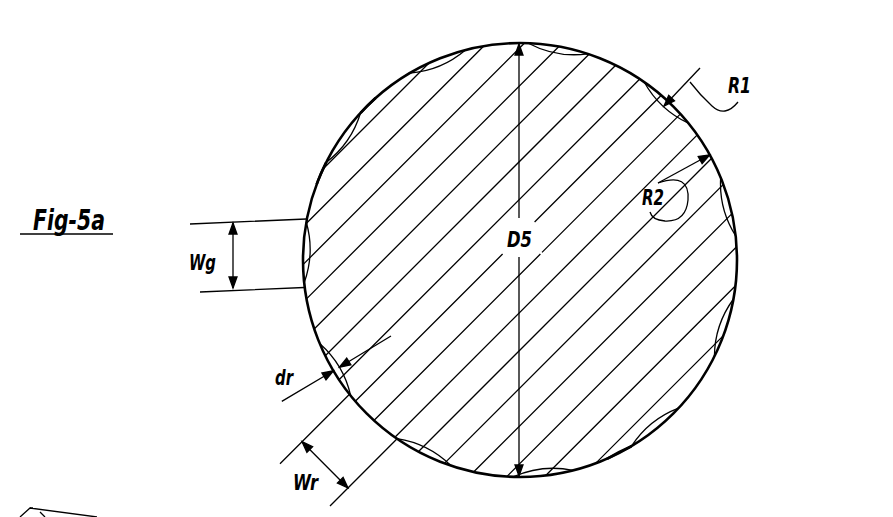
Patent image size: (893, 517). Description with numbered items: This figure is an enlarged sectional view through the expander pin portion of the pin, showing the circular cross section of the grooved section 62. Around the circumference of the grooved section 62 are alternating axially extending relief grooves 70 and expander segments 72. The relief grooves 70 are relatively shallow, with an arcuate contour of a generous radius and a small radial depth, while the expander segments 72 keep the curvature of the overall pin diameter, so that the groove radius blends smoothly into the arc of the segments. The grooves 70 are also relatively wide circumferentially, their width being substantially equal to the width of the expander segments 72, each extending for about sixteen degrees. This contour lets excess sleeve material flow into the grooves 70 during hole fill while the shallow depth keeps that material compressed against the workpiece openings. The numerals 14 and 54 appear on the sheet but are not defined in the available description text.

The wire rope / rod 14 is at (625, 450).
The adjacent component 54 is at (170, 516).
The grooved section 62 is at (597, 105).
The relief grooves 70 is at (447, 66).
The expander segments 72 is at (376, 98).